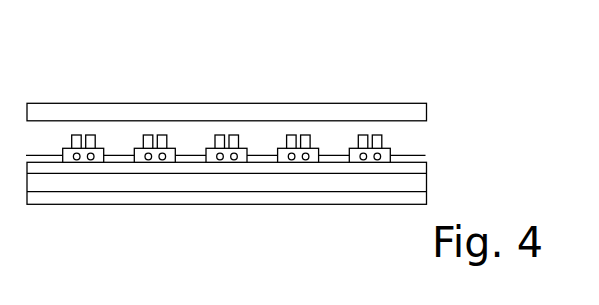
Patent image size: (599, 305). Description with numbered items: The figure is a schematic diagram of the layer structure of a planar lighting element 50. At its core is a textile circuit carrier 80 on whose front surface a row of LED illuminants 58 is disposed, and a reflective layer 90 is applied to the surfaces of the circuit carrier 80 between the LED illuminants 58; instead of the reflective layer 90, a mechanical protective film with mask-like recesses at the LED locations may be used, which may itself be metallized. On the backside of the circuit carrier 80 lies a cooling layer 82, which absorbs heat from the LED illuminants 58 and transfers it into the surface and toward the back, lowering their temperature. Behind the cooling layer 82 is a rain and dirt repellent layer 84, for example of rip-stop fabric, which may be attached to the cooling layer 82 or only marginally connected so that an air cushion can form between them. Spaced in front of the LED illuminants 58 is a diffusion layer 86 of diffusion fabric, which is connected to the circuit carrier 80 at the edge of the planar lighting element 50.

The planar lighting element 50 is at (523, 98).
The LED illuminants 58 is at (377, 134).
The textile circuit carrier 80 is at (275, 214).
The cooling layer 82 is at (400, 185).
The rain and dirt repellent layer 84 is at (343, 197).
The diffusion layer 86 is at (419, 112).
The reflective layer 90 is at (415, 154).